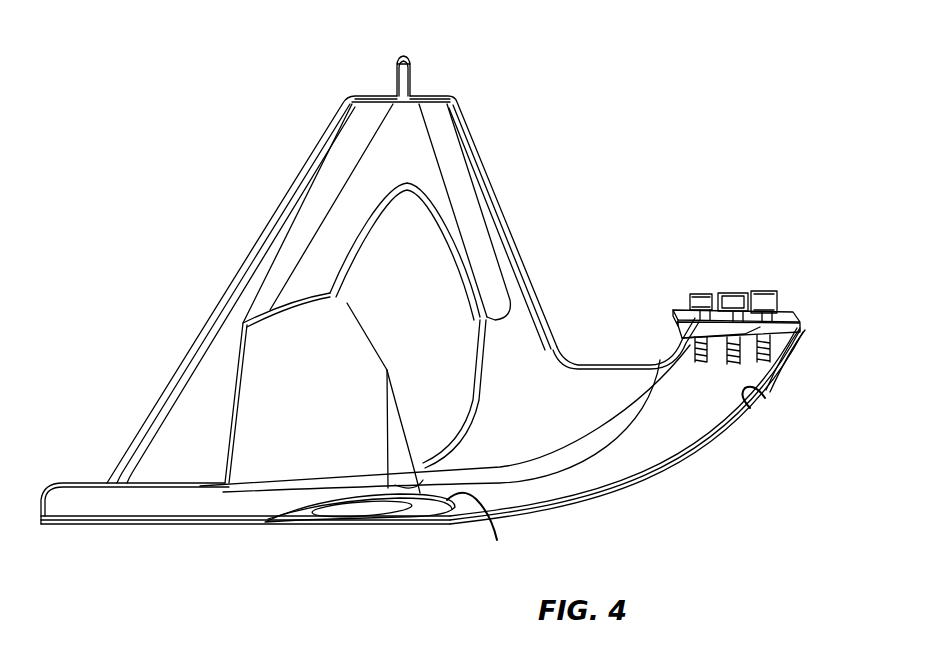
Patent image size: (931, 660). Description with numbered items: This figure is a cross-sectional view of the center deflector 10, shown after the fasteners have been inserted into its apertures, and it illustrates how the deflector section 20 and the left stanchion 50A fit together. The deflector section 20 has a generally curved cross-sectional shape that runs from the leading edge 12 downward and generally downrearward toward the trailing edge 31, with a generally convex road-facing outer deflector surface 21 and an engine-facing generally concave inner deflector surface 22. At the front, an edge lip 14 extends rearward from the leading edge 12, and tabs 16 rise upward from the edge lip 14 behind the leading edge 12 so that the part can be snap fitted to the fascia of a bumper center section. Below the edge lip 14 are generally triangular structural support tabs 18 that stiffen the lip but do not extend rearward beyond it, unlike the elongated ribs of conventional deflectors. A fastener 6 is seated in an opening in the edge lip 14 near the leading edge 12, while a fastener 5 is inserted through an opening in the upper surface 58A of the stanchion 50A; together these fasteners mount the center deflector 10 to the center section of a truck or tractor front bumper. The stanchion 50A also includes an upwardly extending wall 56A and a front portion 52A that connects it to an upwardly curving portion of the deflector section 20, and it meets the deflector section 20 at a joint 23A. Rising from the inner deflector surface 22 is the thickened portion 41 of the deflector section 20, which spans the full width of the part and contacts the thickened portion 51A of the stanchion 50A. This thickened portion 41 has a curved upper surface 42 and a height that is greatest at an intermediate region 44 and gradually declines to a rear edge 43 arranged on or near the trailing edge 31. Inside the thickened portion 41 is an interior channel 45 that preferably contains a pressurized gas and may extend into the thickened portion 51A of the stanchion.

The center deflector 10 is at (138, 102).
The left stanchion 50A is at (363, 62).
The fastener 5 is at (409, 62).
The upper surface 58A is at (446, 98).
The upwardly extending wall 56A is at (422, 236).
The front portion 52A is at (538, 362).
The thickened portion 51A is at (283, 390).
The joint 23A is at (150, 481).
The trailing edge 31 is at (272, 520).
The thickened portion 41 is at (380, 534).
The rear edge 43 is at (287, 525).
The interior channel 45 is at (360, 513).
The intermediate region 44 is at (396, 486).
The curved upper surface 42 is at (474, 528).
The deflector section 20 is at (704, 472).
The outer deflector surface 21 is at (728, 432).
The inner deflector surface 22 is at (760, 412).
The leading edge 12 is at (803, 300).
The edge lip 14 is at (787, 308).
The structural support tabs 18 is at (774, 338).
The fastener 6 is at (690, 298).
The tabs 16 is at (758, 283).